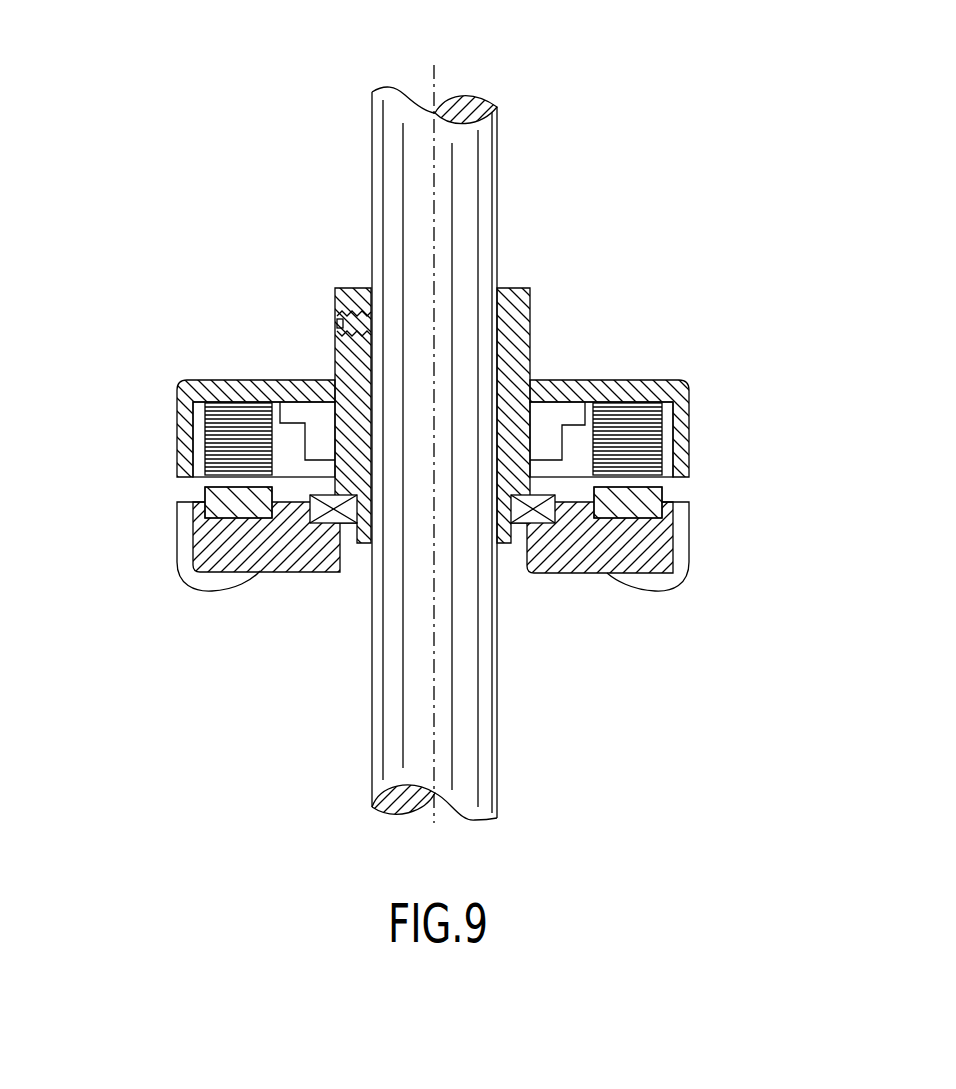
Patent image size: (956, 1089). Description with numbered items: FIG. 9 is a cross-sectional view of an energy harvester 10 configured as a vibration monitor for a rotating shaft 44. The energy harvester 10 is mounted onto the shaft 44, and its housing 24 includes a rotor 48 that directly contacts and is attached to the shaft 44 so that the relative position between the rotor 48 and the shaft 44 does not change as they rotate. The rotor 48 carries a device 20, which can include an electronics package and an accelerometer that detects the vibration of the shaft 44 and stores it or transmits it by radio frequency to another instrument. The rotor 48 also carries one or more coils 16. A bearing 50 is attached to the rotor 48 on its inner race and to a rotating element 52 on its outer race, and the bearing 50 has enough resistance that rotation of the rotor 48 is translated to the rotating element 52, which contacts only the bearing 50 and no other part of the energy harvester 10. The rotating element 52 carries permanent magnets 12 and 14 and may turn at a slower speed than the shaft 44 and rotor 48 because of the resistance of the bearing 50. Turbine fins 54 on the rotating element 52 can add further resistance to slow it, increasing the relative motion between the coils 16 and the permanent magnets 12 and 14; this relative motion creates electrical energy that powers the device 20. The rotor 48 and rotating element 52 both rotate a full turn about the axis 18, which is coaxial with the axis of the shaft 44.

The energy harvester 10 is at (212, 312).
The permanent magnet 12 is at (647, 513).
The permanent magnet 14 is at (213, 505).
The coils 16 is at (215, 443).
The axis 18 is at (435, 82).
The device 20 is at (550, 412).
The housing 24 is at (177, 404).
The shaft 44 is at (478, 158).
The rotor 48 is at (513, 296).
The bearing 50 is at (523, 525).
The rotating element 52 is at (562, 565).
The turbine fins 54 is at (668, 582).